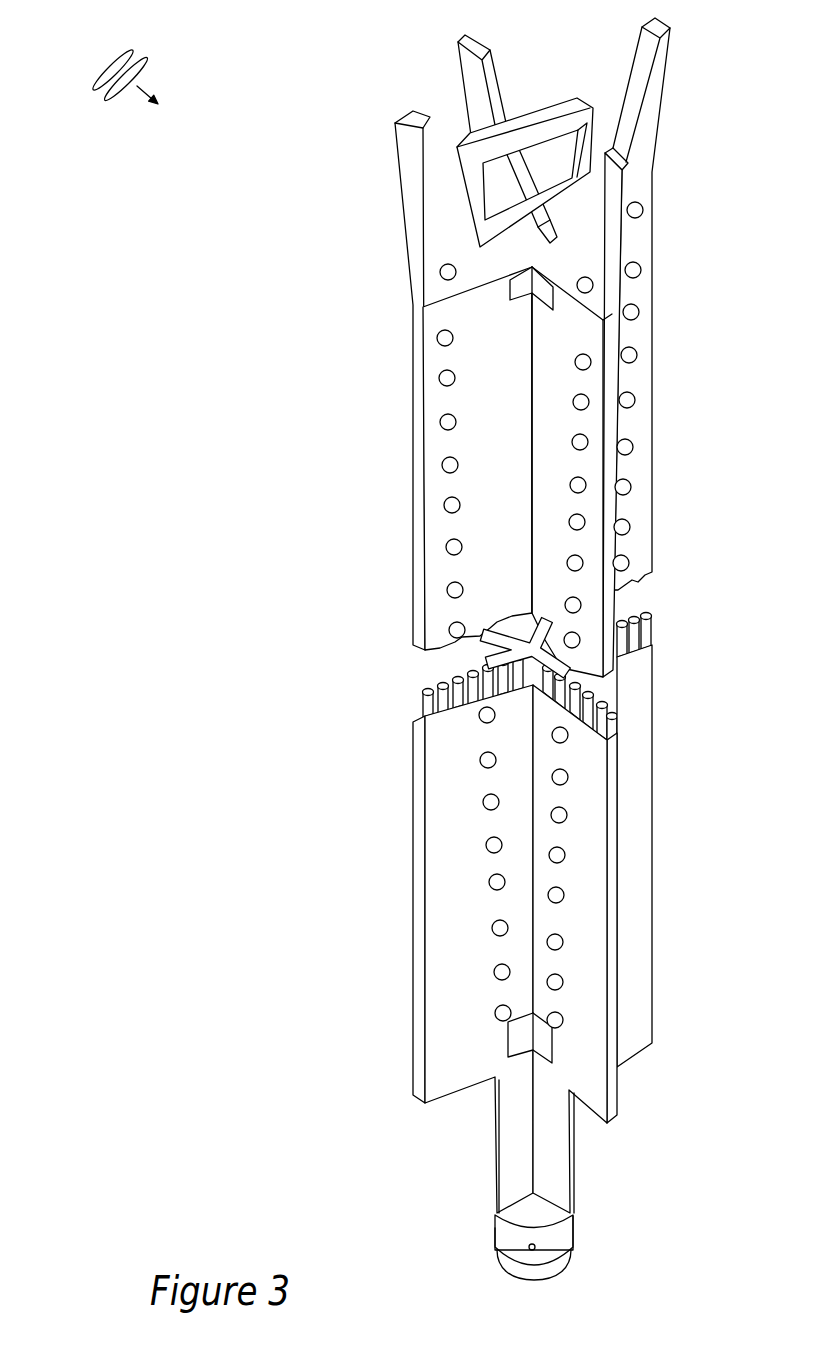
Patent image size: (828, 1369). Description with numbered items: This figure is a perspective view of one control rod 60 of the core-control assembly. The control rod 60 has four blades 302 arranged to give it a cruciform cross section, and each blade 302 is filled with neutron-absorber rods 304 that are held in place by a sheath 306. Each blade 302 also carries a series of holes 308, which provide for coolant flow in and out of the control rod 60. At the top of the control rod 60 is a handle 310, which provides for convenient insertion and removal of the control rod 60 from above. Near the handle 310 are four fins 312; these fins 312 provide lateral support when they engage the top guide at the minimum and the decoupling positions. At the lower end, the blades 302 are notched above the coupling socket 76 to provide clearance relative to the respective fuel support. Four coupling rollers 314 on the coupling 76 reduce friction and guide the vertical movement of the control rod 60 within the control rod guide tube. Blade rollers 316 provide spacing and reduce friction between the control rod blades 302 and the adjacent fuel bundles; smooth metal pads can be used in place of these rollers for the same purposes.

The control rod 60 is at (103, 63).
The coupling socket 76 is at (570, 1255).
The blades 302 is at (628, 466).
The neutron-absorber rods 304 is at (555, 675).
The sheath 306 is at (425, 713).
The holes 308 is at (591, 398).
The handle 310 is at (583, 126).
The fins 312 is at (545, 188).
The coupling rollers 314 is at (493, 1237).
The blade rollers 316 is at (440, 272).